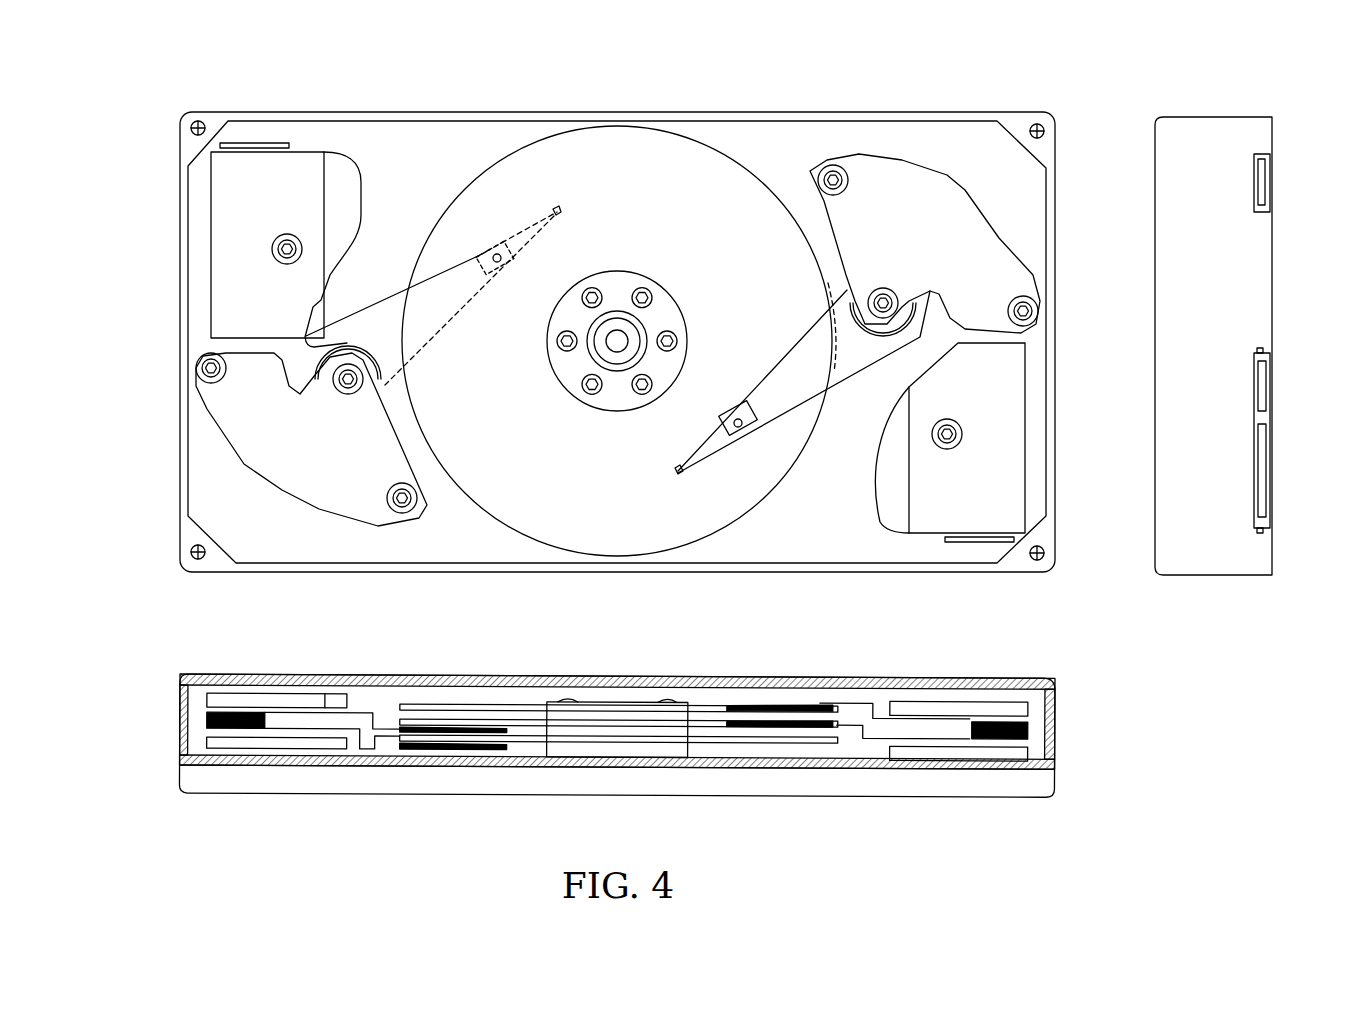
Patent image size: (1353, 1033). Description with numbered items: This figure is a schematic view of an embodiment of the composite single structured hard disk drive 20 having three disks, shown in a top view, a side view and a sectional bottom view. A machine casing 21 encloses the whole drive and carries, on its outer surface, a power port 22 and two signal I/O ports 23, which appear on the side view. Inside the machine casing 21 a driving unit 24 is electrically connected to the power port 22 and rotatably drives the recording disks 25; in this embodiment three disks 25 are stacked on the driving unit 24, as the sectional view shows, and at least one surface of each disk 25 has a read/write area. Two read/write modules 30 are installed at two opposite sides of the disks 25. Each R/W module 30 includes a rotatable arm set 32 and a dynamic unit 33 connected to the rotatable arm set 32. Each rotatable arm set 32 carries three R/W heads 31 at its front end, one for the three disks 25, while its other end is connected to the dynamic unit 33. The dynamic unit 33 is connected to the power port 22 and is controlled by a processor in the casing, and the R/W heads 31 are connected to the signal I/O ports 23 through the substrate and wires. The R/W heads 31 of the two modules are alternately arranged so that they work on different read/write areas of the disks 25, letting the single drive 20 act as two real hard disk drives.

The composite single structured hard disk drive 20 is at (740, 112).
The machine casing 21 is at (317, 130).
The power port 22 is at (1262, 465).
The signal I/O port 23 is at (1262, 175).
The driving unit 24 is at (609, 392).
The recording disk 25 is at (632, 160).
The read/write module 30 is at (608, 295).
The R/W head 31 is at (514, 222).
The rotatable arm set 32 is at (438, 304).
The dynamic unit 33 is at (257, 405).